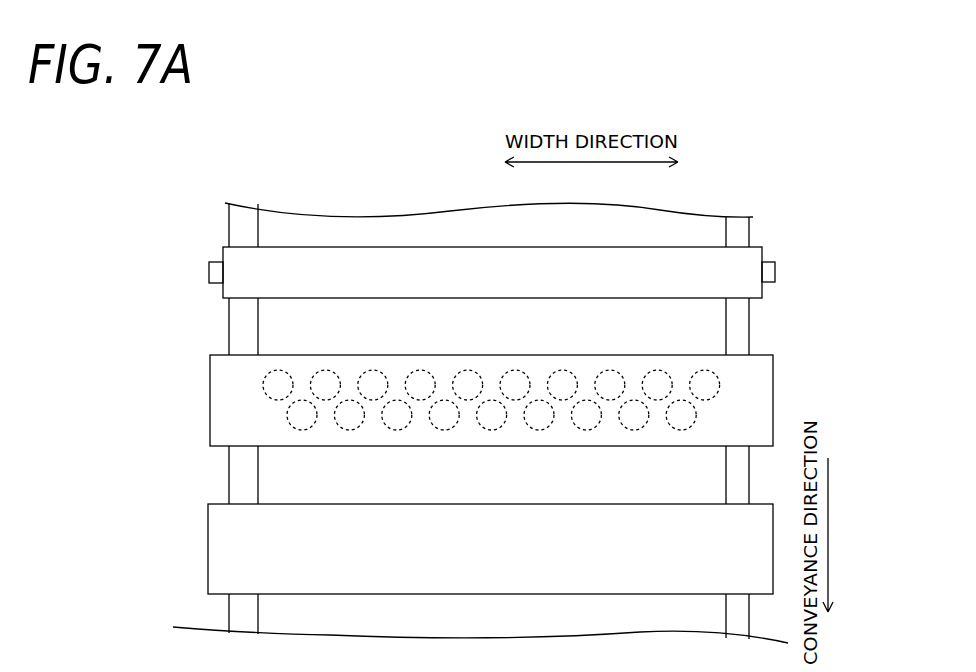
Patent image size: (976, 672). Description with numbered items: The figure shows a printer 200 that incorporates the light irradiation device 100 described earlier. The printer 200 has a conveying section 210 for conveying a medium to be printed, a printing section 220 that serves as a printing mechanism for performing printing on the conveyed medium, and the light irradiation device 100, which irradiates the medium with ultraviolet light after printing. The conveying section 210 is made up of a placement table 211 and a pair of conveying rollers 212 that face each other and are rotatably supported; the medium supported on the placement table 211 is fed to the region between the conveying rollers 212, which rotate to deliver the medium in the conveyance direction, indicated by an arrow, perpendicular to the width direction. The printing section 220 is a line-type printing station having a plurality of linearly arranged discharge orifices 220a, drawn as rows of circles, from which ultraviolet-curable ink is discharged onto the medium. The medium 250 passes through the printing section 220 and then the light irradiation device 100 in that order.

The light irradiation device 100 is at (230, 548).
The printer 200 is at (771, 117).
The conveying section 210 is at (137, 212).
The placement table 211 is at (247, 240).
The conveying rollers 212 is at (247, 260).
The printing section 220 is at (237, 410).
The discharge orifices 220a is at (263, 382).
The conveyance belt 250 is at (280, 223).